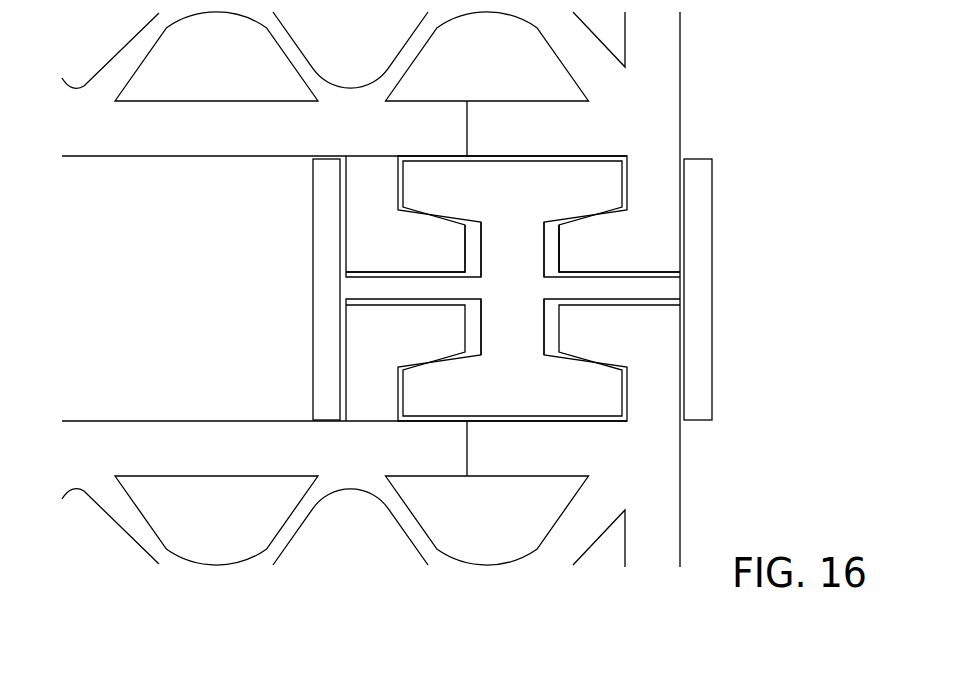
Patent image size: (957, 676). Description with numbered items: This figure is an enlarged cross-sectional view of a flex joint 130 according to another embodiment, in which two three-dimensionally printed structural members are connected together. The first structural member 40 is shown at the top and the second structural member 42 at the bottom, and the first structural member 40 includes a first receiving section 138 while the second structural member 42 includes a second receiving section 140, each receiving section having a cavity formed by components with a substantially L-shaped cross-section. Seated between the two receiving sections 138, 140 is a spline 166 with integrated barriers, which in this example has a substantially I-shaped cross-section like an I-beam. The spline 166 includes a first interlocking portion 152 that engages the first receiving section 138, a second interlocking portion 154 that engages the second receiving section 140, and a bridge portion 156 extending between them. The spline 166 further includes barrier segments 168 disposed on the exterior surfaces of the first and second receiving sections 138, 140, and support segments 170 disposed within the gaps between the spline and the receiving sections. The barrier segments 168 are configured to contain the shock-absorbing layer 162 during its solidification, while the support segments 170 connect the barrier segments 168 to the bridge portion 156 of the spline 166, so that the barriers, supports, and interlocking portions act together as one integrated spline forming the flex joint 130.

The first structural member 40 is at (180, 133).
The second structural member 42 is at (278, 458).
The flex joint 130 is at (702, 61).
The first receiving section 138 is at (322, 208).
The second receiving section 140 is at (322, 384).
The first interlocking portion 152 is at (518, 185).
The second interlocking portion 154 is at (562, 405).
The bridge portion 156 is at (530, 297).
The shock-absorbing layer 162 is at (553, 245).
The spline 166 is at (328, 249).
The barrier segments 168 is at (700, 307).
The support segments 170 is at (388, 290).